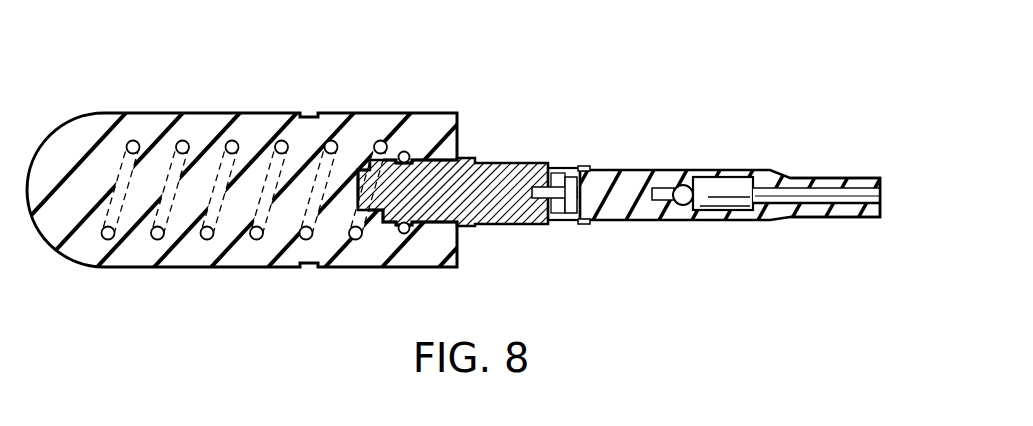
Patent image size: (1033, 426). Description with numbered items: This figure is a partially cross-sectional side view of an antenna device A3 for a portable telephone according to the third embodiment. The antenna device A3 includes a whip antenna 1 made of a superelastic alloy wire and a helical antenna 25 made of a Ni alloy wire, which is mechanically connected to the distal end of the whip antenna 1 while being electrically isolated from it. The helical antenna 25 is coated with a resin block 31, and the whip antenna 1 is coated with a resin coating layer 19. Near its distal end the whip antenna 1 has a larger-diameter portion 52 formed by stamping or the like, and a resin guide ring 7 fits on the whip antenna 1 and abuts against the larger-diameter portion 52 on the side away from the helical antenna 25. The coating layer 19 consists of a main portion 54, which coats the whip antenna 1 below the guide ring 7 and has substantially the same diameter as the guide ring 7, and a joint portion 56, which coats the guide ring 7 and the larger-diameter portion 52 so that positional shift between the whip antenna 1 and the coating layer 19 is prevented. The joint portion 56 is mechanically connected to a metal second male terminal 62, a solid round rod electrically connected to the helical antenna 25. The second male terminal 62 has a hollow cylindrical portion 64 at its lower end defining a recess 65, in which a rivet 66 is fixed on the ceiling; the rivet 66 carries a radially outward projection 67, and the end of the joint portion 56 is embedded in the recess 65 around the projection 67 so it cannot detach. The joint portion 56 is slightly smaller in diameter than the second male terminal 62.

The antenna device A3 is at (441, 70).
The resin block 31 is at (235, 254).
The helical antenna 25 is at (281, 142).
The second male terminal 62 is at (510, 172).
The hollow cylindrical portion 64 is at (563, 167).
The recess 65 is at (560, 221).
The rivet 66 is at (537, 200).
The projection 67 is at (587, 222).
The joint portion 56 is at (622, 170).
The larger-diameter portion 52 is at (685, 184).
The guide ring 7 is at (723, 183).
The coating layer 19 is at (806, 212).
The whip antenna 1 is at (815, 194).
The main portion 54 is at (852, 181).